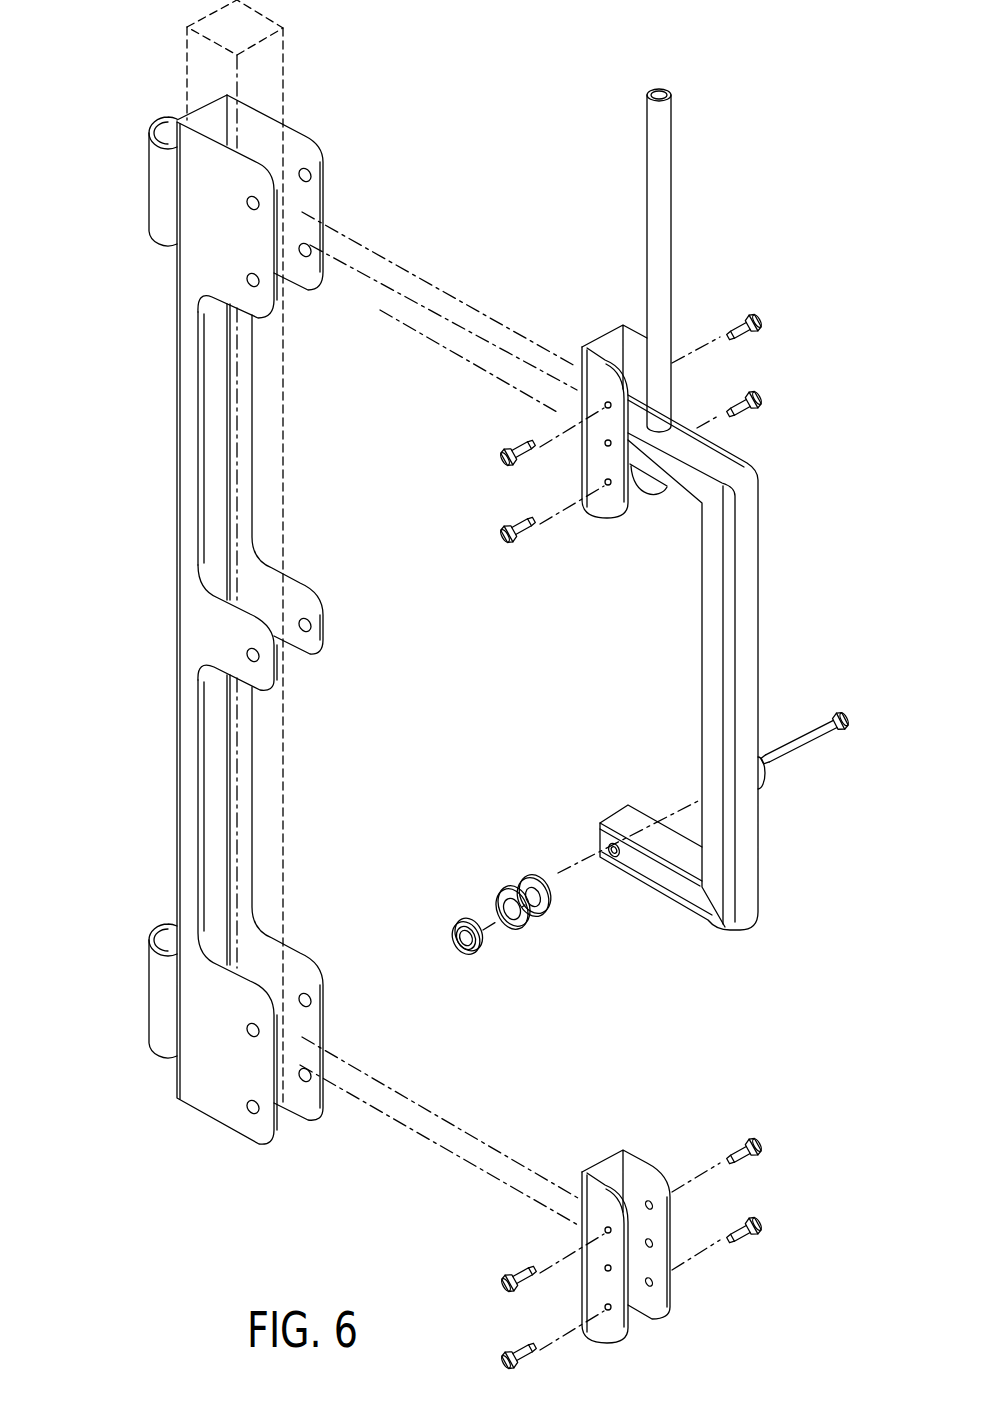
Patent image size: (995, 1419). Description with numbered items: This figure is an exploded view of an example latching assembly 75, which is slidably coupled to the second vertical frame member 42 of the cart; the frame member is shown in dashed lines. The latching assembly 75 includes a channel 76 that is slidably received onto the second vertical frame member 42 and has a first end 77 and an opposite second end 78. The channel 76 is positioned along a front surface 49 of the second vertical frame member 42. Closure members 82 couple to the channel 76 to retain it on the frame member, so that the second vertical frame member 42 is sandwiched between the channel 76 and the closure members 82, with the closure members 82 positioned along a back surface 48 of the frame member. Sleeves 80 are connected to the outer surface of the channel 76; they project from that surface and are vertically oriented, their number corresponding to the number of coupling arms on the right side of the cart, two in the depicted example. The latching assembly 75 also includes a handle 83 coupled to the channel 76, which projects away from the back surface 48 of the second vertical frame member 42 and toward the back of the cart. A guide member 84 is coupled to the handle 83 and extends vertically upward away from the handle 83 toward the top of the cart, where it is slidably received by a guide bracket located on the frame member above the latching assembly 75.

The second vertical frame member 42 is at (245, 33).
The back surface 48 is at (265, 65).
The front surface 49 is at (207, 17).
The latching assembly 75 is at (128, 513).
The channel 76 is at (195, 625).
The first end 77 is at (202, 277).
The second end 78 is at (177, 460).
The sleeve 80 is at (160, 163).
The closure member 82 is at (580, 365).
The handle 83 is at (747, 591).
The guide member 84 is at (662, 258).